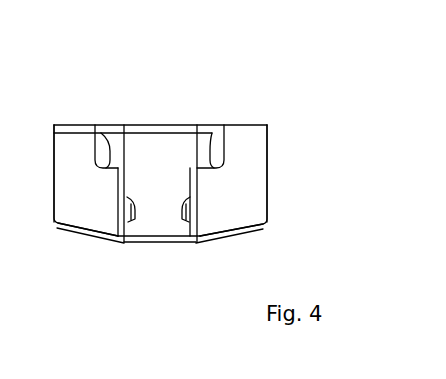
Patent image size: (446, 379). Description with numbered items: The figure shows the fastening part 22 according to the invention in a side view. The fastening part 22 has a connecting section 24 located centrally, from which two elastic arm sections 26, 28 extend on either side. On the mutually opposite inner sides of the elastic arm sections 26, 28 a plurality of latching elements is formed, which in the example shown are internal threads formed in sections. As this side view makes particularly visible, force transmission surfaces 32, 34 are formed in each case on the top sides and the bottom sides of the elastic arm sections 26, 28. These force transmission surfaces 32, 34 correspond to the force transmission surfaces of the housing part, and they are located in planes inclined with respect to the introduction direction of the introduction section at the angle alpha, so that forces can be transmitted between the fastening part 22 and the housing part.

The fastening part 22 is at (243, 53).
The connecting section 24 is at (153, 147).
The elastic arm section 26 is at (253, 186).
The elastic arm section 28 is at (67, 193).
The force transmission surface 32 is at (107, 140).
The force transmission surface 34 is at (79, 234).